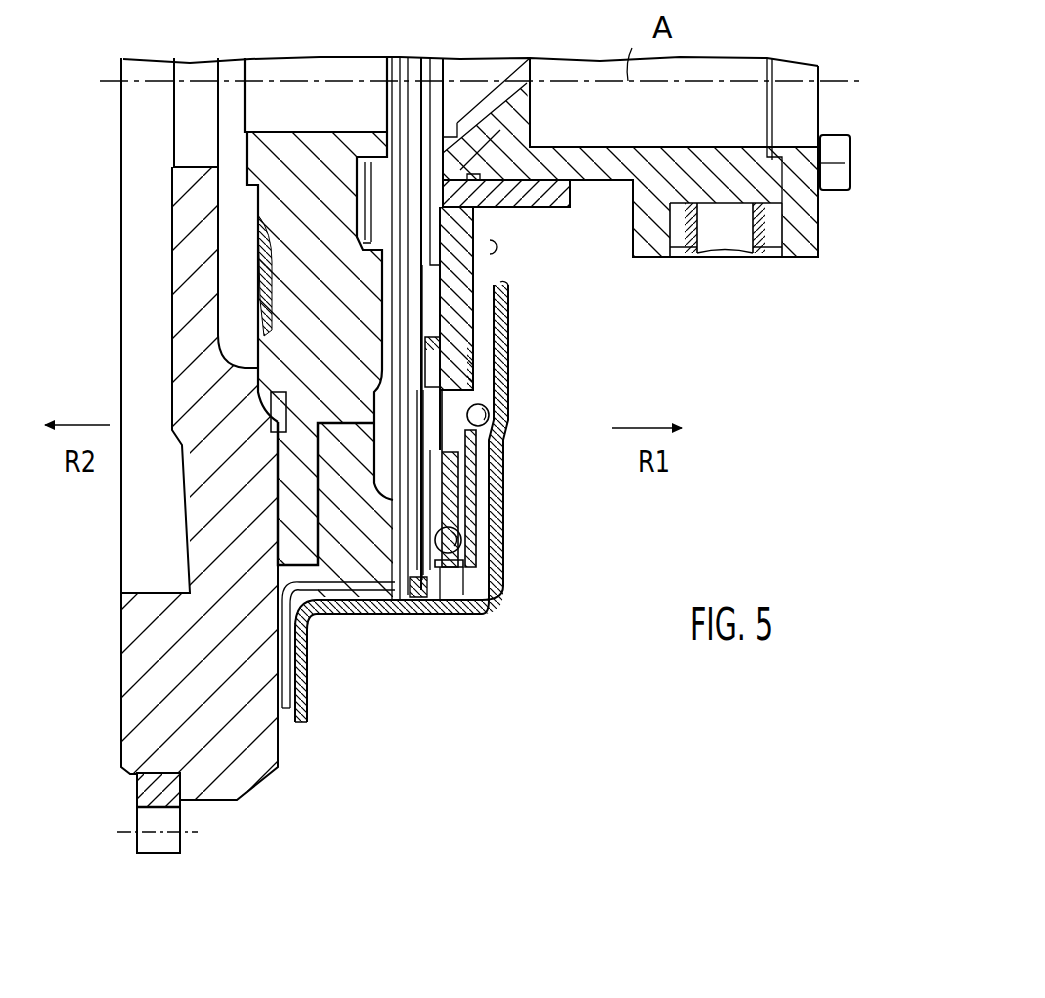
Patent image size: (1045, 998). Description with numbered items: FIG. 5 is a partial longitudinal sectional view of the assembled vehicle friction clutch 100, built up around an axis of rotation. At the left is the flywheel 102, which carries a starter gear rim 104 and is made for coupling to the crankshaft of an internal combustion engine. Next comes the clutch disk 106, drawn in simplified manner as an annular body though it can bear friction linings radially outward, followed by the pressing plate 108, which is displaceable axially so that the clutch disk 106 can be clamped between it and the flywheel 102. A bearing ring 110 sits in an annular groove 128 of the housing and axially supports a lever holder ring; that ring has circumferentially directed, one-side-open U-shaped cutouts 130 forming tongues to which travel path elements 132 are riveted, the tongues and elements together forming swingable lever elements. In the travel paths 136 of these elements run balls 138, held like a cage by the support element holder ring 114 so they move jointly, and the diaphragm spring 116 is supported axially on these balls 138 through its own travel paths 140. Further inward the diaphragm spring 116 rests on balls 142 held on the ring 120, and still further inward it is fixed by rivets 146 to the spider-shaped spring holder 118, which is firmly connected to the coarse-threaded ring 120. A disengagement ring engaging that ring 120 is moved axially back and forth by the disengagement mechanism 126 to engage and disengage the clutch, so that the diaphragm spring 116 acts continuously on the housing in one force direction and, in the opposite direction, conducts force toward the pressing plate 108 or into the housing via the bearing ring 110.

The friction clutch 100 is at (506, 708).
The flywheel 102 is at (265, 748).
The starter gear rim 104 is at (172, 845).
The clutch disk 106 is at (278, 330).
The pressing plate 108 is at (345, 635).
The bearing ring 110 is at (453, 613).
The support element holder ring 114 is at (460, 483).
The diaphragm spring 116 is at (476, 503).
The spring holder 118 is at (460, 312).
The ring 120 is at (545, 205).
The disengagement mechanism 126 is at (748, 280).
The annular groove 128 is at (410, 615).
The U-shaped cutouts 130 is at (400, 530).
The travel path elements 132 is at (385, 597).
The travel paths 136 is at (455, 605).
The balls 138 is at (503, 597).
The travel paths 140 is at (455, 545).
The balls 142 is at (490, 405).
The rivets 146 is at (440, 356).